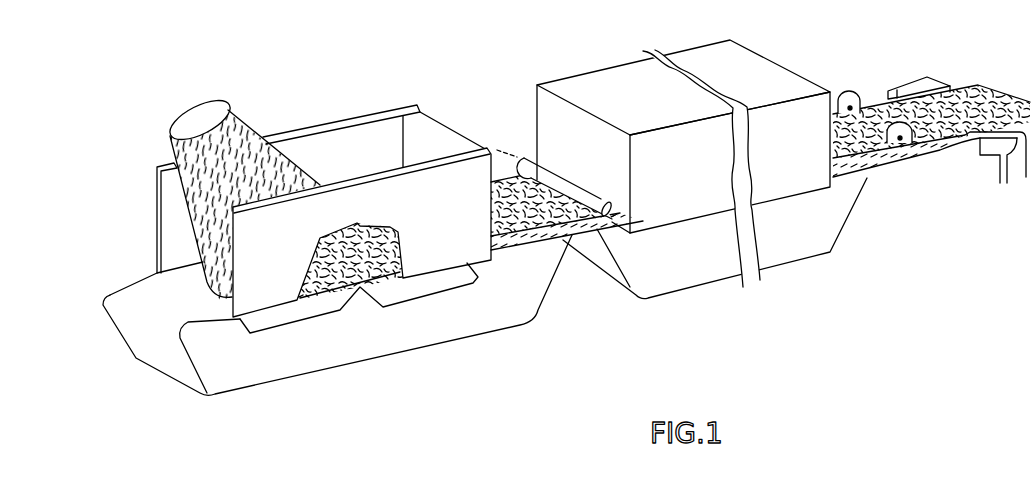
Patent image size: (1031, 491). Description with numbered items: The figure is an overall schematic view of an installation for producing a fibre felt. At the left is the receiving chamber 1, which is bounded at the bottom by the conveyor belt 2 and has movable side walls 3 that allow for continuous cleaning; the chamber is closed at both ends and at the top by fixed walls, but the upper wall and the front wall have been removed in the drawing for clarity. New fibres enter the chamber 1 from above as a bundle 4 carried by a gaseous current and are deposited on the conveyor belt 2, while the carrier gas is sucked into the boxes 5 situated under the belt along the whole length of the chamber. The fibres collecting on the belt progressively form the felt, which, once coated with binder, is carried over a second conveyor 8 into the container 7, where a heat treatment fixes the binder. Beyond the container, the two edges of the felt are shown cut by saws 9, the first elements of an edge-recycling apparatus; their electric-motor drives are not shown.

The receiving chamber 1 is at (350, 158).
The conveyor belt 2 is at (152, 305).
The side walls 3 is at (460, 252).
The bundle 4 is at (247, 153).
The boxes 5 is at (313, 313).
The container 7 is at (593, 85).
The second conveyor 8 is at (612, 277).
The saws 9 is at (850, 97).